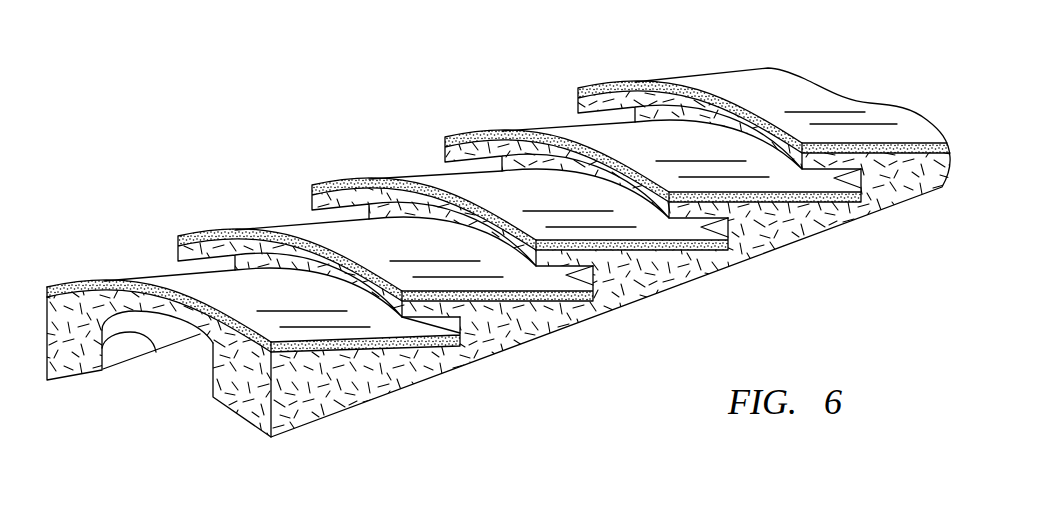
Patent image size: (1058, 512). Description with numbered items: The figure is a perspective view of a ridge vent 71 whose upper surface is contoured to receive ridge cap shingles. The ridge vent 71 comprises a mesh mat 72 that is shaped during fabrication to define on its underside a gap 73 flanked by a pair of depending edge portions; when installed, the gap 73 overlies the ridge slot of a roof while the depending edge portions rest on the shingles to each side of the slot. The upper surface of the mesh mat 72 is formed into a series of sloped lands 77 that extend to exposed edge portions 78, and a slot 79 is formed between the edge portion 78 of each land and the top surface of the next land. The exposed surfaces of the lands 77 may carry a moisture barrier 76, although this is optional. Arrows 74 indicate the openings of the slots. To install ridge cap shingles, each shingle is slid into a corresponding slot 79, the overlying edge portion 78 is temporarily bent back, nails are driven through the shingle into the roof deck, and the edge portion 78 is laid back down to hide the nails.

The ridge vent 71 is at (197, 162).
The mesh mat 72 is at (375, 377).
The gap 73 is at (156, 352).
The gap 74 is at (357, 219).
The moisture barrier 76 is at (504, 301).
The sloped lands 77 is at (313, 240).
The exposed edge portions 78 is at (352, 270).
The slot 79 is at (588, 275).